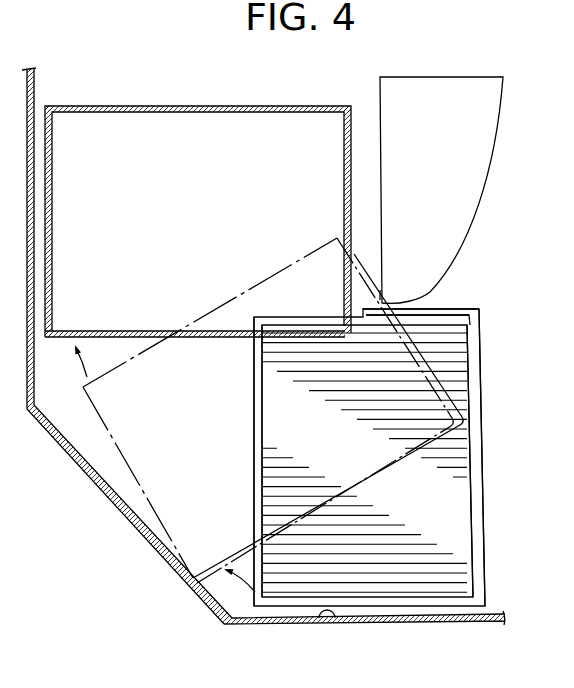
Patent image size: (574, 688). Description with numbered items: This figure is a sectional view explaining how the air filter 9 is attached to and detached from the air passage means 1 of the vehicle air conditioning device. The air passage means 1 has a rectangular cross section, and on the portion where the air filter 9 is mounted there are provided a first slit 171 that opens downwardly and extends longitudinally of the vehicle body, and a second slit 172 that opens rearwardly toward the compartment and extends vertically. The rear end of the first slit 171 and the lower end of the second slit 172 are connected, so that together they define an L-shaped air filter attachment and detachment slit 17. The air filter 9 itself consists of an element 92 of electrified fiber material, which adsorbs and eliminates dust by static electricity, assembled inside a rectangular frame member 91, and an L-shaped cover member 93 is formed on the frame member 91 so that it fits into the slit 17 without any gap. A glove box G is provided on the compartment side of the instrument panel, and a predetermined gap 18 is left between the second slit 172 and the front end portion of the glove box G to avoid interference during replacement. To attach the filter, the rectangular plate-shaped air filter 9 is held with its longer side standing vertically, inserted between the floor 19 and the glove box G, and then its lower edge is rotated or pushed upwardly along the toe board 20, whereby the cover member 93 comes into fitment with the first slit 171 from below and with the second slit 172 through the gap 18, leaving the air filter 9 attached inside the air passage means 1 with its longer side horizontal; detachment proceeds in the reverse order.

The air passage means 1 is at (181, 104).
The air filter 9 is at (489, 499).
The frame member 91 is at (258, 458).
The element 92 is at (450, 446).
The cover member 93 is at (449, 308).
The air filter attachment and detachment slit 17 is at (260, 210).
The first slit 171 is at (150, 333).
The second slit 172 is at (343, 272).
The gap 18 is at (367, 246).
The floor 19 is at (335, 620).
The toe board 20 is at (100, 487).
The glove box G is at (444, 188).